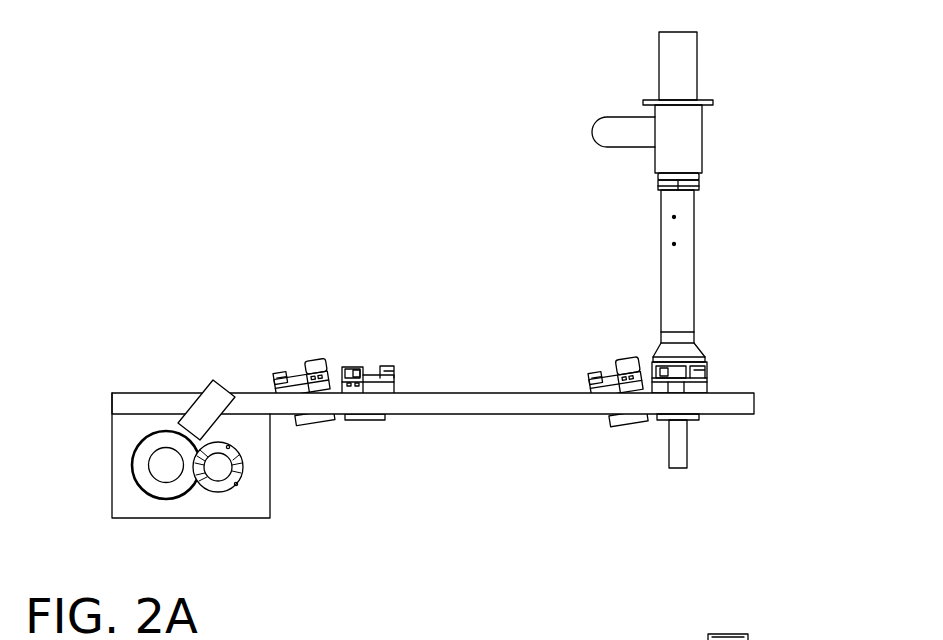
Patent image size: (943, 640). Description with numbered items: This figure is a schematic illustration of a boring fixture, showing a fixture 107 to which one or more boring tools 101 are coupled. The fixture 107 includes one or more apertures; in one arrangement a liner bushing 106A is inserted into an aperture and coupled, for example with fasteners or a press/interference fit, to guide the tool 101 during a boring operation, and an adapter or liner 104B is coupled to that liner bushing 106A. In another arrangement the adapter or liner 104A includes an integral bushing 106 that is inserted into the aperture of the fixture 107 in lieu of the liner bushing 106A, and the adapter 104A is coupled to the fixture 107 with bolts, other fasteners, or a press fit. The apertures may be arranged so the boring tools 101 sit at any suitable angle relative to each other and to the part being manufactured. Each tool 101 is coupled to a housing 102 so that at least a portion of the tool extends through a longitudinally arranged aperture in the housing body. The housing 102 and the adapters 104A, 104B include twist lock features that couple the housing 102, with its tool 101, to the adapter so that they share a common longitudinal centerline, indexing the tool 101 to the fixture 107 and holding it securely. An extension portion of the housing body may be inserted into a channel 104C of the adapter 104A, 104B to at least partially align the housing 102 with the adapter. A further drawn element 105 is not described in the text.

The boring tool 101 is at (698, 68).
The housing 102 is at (694, 257).
The adapter 104A is at (387, 350).
The adapter 104B is at (287, 368).
The channel 104C is at (213, 472).
The mounting block 105 is at (350, 367).
The integral bushing 106 is at (365, 420).
The liner bushing 106A is at (302, 424).
The fixture 107 is at (470, 414).